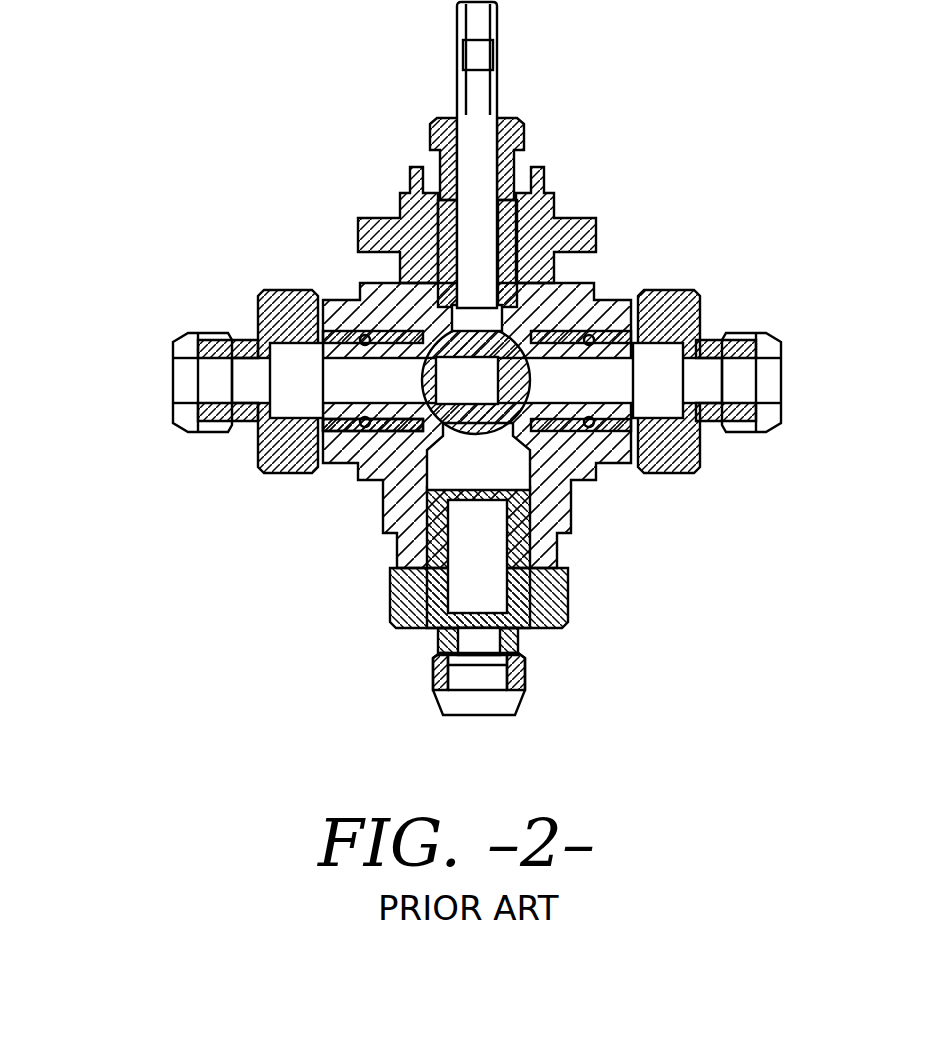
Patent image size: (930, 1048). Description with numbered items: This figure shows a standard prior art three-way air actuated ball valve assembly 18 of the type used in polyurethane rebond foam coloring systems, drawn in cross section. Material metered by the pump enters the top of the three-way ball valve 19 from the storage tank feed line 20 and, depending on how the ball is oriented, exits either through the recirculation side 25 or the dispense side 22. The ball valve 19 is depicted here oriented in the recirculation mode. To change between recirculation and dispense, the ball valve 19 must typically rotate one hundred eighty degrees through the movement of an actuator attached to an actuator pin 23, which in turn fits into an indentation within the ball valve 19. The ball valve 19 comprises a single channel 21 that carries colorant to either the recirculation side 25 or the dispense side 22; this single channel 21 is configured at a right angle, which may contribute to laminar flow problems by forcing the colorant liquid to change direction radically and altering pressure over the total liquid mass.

The three-way air actuated ball valve assembly 18 is at (96, 0).
The ball valve 19 is at (500, 352).
The storage tank feed line 20 is at (489, 706).
The single channel 21 is at (362, 440).
The dispense side 22 is at (778, 370).
The actuator pin 23 is at (478, 328).
The recirculation side 25 is at (183, 377).